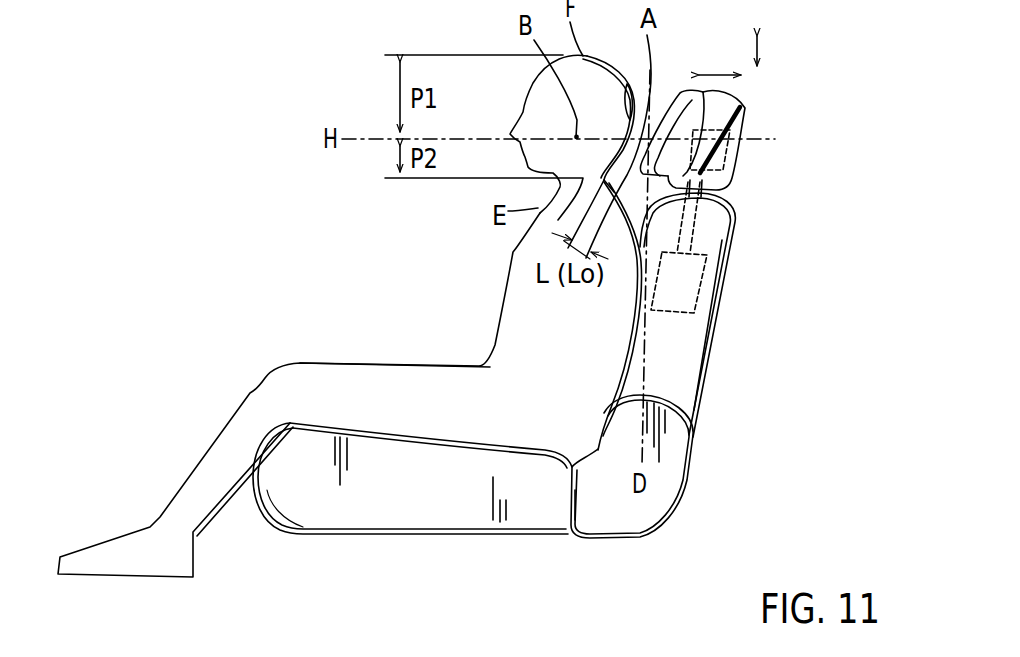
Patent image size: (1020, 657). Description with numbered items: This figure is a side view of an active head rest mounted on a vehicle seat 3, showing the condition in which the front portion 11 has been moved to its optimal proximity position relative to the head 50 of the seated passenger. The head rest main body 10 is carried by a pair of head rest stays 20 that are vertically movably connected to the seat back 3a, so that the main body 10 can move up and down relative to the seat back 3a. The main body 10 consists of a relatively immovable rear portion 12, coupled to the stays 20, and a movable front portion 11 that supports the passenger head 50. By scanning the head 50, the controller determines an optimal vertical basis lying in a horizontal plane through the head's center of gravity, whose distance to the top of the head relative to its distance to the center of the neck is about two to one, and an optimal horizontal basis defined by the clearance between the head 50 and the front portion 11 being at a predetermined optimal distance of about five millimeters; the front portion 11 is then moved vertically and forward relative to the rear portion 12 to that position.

The vehicle seat 3 is at (396, 281).
The seat back 3a is at (668, 362).
The main body 10 is at (730, 128).
The front portion 11 is at (680, 105).
The rear portion 12 is at (735, 158).
The head rest stays 20 is at (712, 192).
The head 50 is at (600, 72).